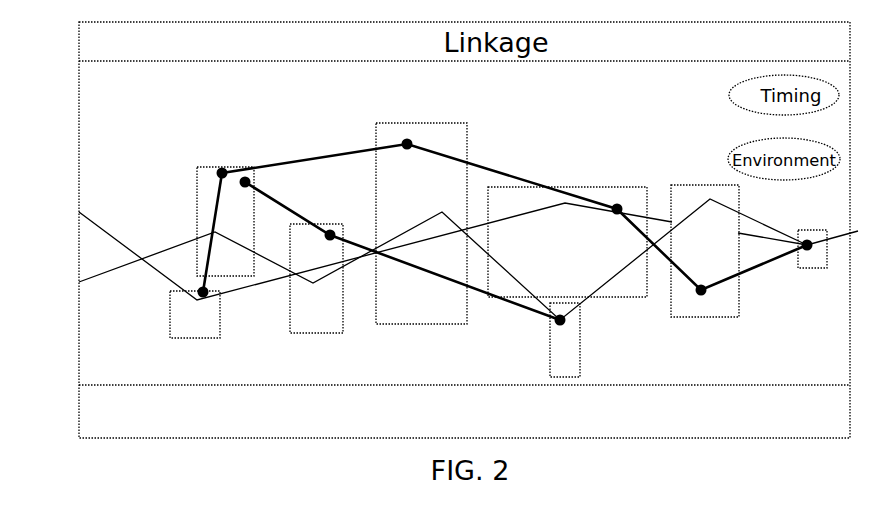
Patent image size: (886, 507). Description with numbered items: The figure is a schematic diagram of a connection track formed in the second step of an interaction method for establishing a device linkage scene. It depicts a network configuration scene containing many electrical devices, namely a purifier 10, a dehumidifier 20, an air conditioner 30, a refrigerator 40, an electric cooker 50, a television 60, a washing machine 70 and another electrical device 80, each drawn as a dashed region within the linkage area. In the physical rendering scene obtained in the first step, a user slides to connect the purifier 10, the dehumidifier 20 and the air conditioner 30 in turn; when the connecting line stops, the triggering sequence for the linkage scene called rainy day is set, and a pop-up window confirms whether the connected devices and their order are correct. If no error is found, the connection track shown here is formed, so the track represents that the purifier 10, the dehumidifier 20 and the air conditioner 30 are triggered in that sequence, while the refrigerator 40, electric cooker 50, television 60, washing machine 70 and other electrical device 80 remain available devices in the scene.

The purifier 10 is at (580, 362).
The dehumidifier 20 is at (318, 333).
The air conditioner 30 is at (197, 180).
The refrigerator 40 is at (425, 324).
The electric cooker 50 is at (195, 338).
The television 60 is at (597, 187).
The washing machine 70 is at (693, 317).
The other electrical device 80 is at (807, 268).